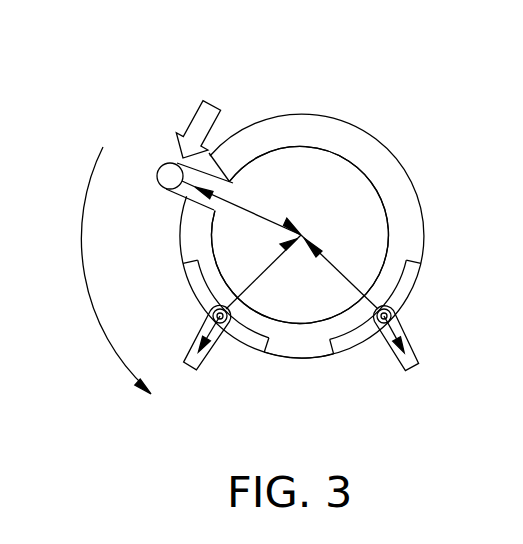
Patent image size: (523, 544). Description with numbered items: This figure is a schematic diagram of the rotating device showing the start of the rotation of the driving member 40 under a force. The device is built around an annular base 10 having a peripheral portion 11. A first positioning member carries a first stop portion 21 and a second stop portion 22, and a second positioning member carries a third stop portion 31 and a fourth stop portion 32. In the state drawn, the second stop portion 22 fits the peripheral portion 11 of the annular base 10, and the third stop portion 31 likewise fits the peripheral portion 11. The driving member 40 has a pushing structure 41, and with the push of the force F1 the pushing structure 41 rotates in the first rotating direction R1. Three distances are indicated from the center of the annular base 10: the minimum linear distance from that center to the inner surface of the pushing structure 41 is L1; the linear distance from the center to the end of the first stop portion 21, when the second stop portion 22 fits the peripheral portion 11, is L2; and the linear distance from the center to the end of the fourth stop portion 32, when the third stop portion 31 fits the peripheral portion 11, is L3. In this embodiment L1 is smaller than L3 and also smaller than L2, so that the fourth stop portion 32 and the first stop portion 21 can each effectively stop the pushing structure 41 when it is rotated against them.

The annular base 10 is at (307, 128).
The peripheral portion 11 is at (295, 357).
The first stop portion 21 is at (197, 343).
The second stop portion 22 is at (193, 284).
The third stop portion 31 is at (417, 287).
The fourth stop portion 32 is at (408, 340).
The driving member 40 is at (347, 198).
The pushing structure 41 is at (159, 168).
The force F1 is at (189, 121).
The first rotating direction R1 is at (98, 270).
The minimum linear distance L1 is at (241, 207).
The linear distance L2 is at (263, 274).
The linear distance L3 is at (339, 272).